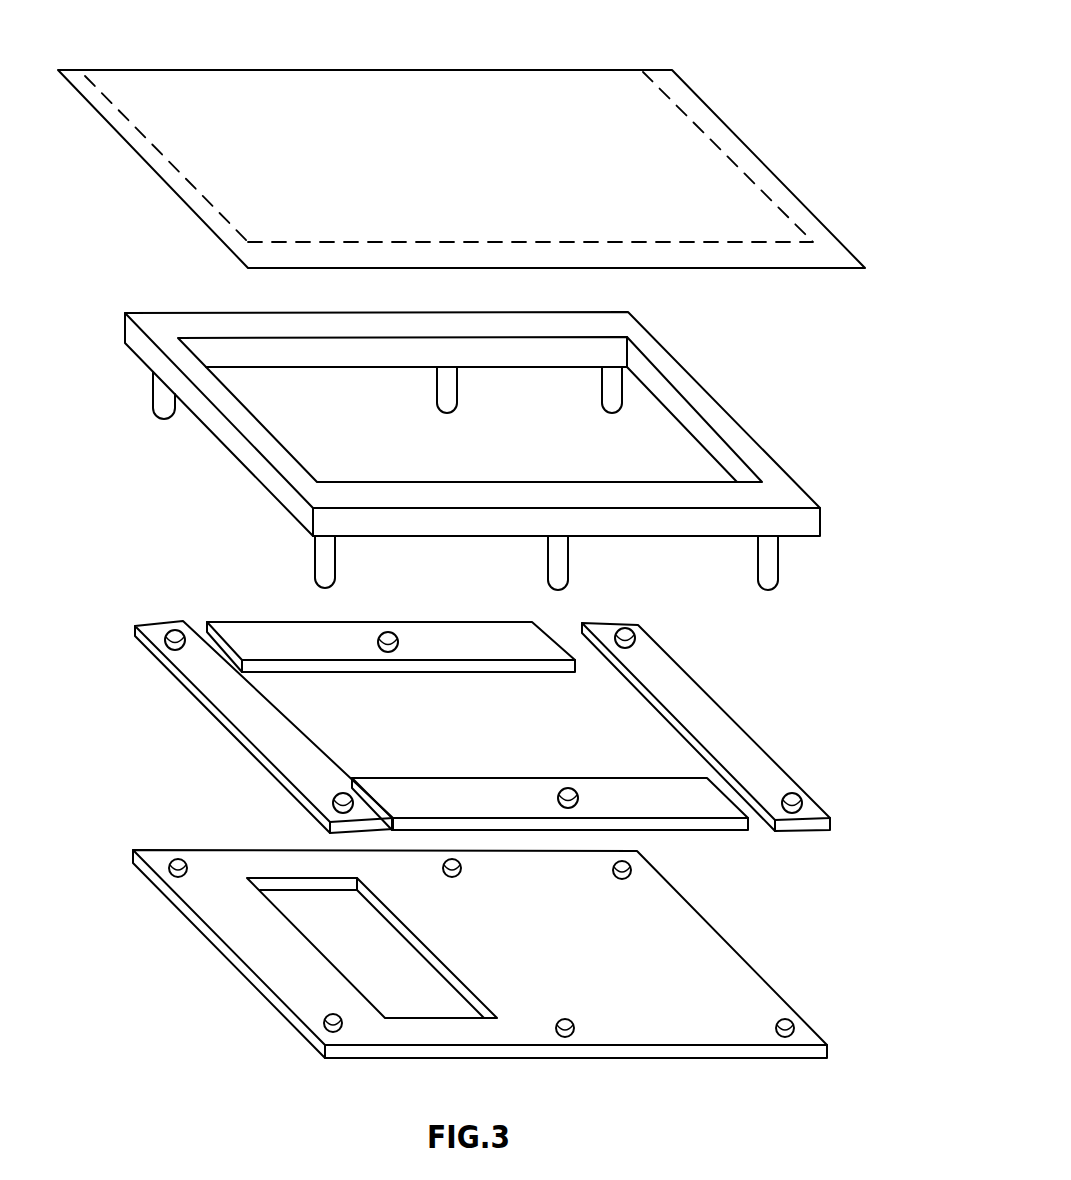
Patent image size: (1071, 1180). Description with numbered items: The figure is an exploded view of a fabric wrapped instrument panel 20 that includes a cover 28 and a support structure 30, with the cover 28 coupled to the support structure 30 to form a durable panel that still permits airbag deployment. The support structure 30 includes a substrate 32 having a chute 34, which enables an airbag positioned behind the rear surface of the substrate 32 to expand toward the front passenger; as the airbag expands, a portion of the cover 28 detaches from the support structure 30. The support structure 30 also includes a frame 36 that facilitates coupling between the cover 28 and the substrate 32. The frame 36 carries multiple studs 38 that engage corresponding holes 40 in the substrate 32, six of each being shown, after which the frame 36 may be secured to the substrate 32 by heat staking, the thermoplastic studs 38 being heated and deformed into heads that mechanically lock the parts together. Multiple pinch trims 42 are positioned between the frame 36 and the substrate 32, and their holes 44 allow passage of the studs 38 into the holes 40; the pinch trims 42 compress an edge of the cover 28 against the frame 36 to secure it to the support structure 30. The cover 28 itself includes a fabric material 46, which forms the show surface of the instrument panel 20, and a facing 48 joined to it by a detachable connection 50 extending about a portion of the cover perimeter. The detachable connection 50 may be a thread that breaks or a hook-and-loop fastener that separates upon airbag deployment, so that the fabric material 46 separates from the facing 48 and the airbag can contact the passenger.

The fabric wrapped instrument panel 20 is at (479, 692).
The cover 28 is at (461, 149).
The support structure 30 is at (510, 961).
The substrate 32 is at (757, 1050).
The chute 34 is at (417, 947).
The frame 36 is at (483, 437).
The studs 38 is at (158, 395).
The holes 40 is at (177, 858).
The pinch trims 42 is at (217, 718).
The holes 44 is at (163, 643).
The fabric material 46 is at (222, 93).
The facing 48 is at (150, 157).
The detachable connection 50 is at (728, 238).